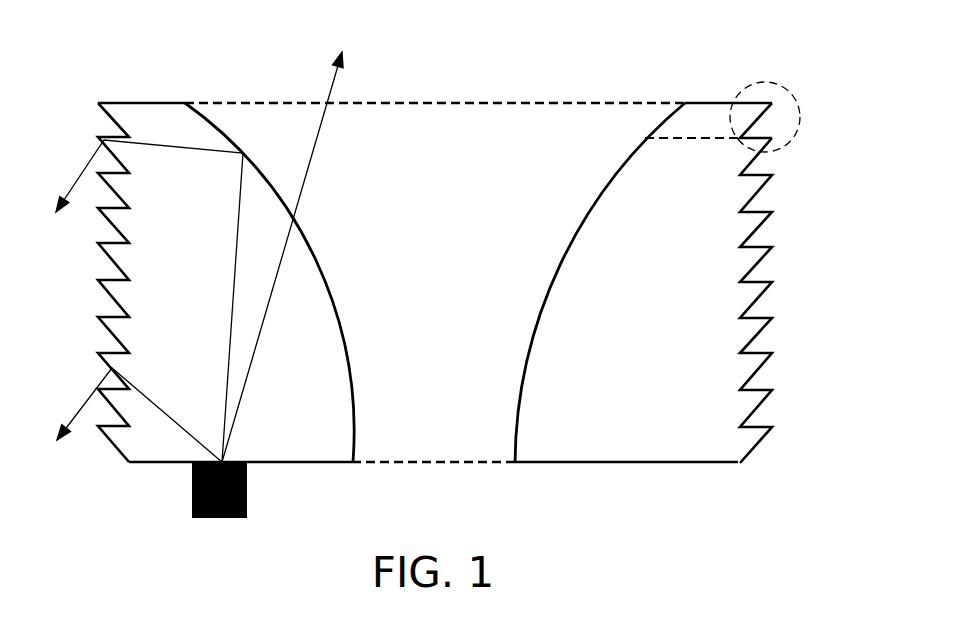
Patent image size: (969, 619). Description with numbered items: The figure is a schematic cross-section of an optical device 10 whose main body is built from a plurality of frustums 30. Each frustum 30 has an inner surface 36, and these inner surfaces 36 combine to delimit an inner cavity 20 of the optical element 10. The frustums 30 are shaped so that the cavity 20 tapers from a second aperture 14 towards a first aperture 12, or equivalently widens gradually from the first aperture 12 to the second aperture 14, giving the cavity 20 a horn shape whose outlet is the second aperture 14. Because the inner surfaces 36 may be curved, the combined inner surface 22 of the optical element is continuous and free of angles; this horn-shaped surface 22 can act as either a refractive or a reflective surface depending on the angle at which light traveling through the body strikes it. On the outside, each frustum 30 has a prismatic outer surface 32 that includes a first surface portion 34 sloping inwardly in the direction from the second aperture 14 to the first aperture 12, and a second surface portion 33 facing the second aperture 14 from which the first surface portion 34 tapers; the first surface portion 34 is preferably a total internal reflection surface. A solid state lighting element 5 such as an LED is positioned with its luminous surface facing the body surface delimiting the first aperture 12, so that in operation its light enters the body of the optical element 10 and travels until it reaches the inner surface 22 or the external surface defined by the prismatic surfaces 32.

The optical device 10 is at (118, 85).
The solid state lighting element 5 is at (192, 492).
The first aperture 12 is at (431, 465).
The second aperture 14 is at (437, 103).
The inner cavity 20 is at (419, 295).
The inner surface 22 is at (229, 134).
The frustum 30 is at (720, 103).
The prismatic outer surface 32 is at (788, 143).
The second surface portion 33 is at (777, 128).
The first surface portion 34 is at (763, 292).
The inner surface 36 is at (655, 125).